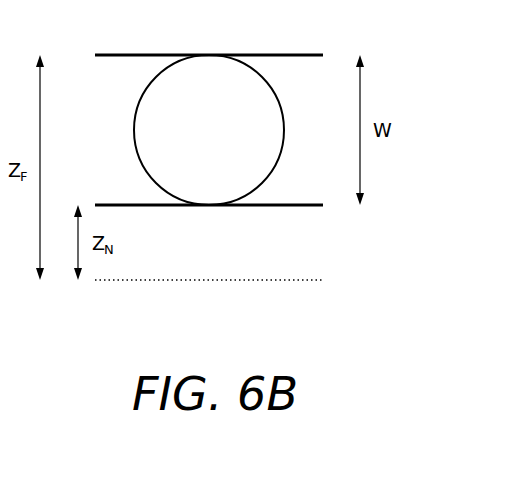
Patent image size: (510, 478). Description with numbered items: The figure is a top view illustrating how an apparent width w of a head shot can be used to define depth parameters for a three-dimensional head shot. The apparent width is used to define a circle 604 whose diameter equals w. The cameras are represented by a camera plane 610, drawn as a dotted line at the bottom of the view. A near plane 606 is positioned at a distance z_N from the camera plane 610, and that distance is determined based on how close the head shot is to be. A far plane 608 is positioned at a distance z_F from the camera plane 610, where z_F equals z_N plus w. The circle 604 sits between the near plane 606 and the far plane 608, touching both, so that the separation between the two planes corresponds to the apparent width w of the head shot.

The circle 604 is at (209, 130).
The near plane 606 is at (283, 207).
The far plane 608 is at (283, 55).
The camera plane 610 is at (283, 281).